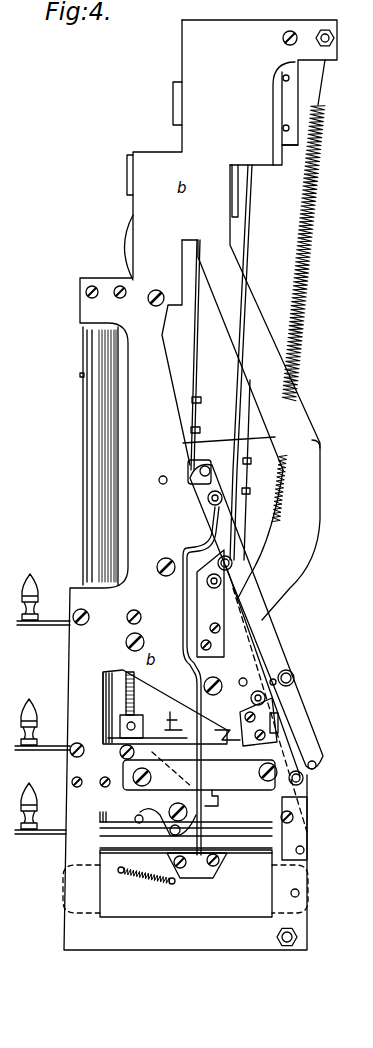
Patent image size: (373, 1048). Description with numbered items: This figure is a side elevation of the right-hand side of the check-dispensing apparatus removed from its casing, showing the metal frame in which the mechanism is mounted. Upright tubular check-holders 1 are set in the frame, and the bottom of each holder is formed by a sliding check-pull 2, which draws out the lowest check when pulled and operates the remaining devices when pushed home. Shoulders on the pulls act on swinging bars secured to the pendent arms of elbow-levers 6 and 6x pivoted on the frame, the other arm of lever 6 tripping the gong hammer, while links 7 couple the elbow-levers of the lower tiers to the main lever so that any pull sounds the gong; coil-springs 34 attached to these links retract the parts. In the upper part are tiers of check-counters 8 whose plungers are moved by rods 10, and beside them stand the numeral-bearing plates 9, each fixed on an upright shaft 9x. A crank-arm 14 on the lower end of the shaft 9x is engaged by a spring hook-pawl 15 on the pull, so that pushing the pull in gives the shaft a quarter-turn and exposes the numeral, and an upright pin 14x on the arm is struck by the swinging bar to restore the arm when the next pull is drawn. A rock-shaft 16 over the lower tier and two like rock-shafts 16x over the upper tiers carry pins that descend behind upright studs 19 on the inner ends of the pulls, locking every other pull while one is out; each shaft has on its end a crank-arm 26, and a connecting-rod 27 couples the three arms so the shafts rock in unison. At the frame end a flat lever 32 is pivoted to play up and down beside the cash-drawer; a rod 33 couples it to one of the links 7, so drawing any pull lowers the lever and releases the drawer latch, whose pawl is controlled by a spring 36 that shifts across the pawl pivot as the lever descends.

The tubular check-holder 1 is at (95, 442).
The check-pull 2 is at (42, 713).
The elbow-lever 6 is at (215, 441).
The elbow-lever 6x is at (188, 470).
The link 7 is at (277, 641).
The check-counter 8 is at (123, 240).
The numeral-bearing plate 9 is at (173, 100).
The upright shaft 9x is at (236, 392).
The rod 10 is at (246, 517).
The crank-arm 14 is at (224, 800).
The upright pin 14x is at (166, 708).
The spring hook-pawl 15 is at (220, 729).
The rock-shaft 16 is at (289, 787).
The rock-shaft 16x is at (251, 700).
The upright stud 19 is at (280, 722).
The crank-arm 26 is at (225, 556).
The connecting-rod 27 is at (258, 655).
The flat lever 32 is at (185, 883).
The rod 33 is at (181, 612).
The coil-spring 34 is at (253, 340).
The spring 36 is at (146, 881).